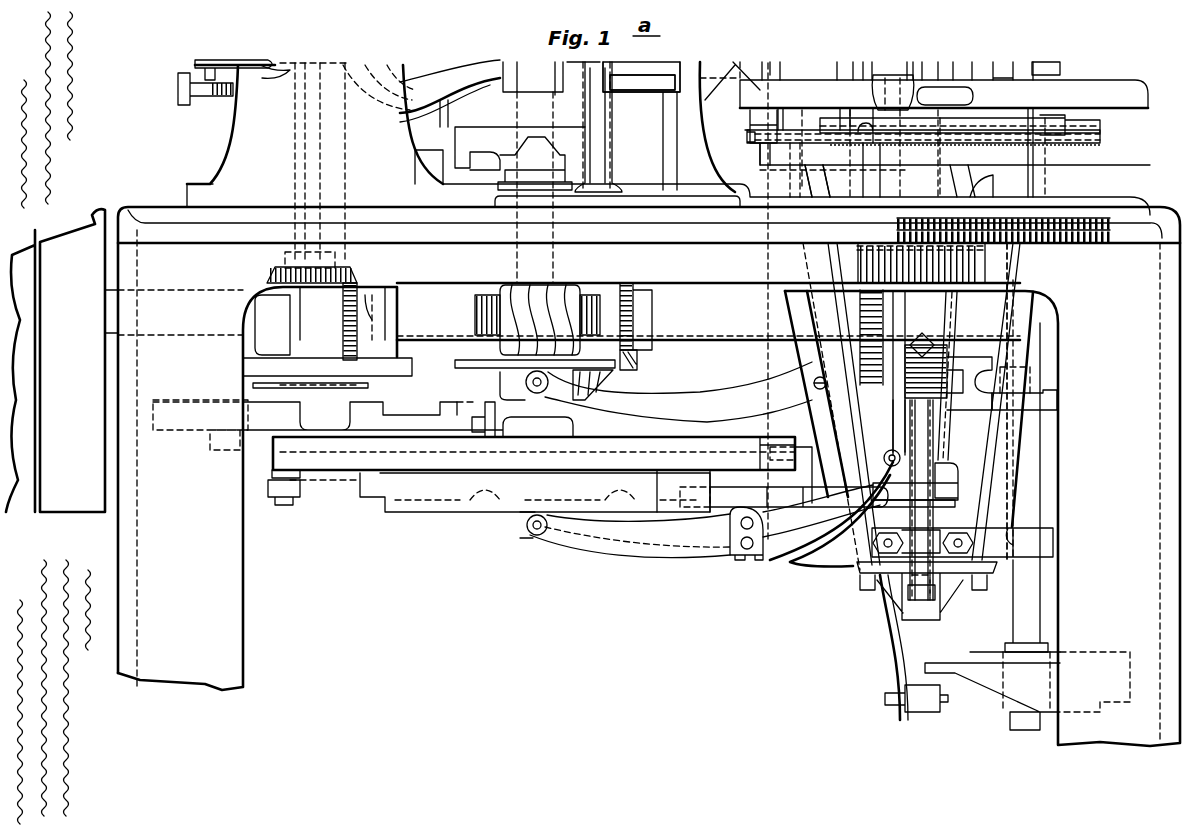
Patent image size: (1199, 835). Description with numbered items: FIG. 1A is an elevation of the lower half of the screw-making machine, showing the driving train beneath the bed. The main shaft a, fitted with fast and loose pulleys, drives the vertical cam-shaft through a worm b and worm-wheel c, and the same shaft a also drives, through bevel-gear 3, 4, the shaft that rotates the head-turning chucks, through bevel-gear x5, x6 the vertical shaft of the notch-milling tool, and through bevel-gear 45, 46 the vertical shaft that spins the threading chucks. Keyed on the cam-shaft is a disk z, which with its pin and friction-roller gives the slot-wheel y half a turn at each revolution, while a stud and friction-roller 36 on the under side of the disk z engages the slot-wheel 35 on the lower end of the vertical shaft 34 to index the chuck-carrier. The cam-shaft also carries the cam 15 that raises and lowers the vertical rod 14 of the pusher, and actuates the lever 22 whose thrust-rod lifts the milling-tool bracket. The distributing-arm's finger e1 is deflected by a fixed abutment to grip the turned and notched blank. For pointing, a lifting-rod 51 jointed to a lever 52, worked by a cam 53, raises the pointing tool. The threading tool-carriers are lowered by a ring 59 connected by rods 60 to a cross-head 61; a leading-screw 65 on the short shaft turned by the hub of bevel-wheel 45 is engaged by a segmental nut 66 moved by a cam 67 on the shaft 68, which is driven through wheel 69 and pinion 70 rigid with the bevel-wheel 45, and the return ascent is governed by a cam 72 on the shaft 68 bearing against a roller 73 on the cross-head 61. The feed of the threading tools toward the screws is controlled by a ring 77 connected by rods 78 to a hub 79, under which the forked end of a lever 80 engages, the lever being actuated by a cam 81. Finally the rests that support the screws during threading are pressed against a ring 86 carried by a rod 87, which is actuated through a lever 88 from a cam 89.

The lever 22 is at (205, 62).
The vertical rod 14 is at (425, 133).
The cam 15 is at (578, 152).
The finger e1 is at (615, 80).
The ring 59 is at (760, 158).
The ring 77 is at (790, 152).
The ring 86 is at (1090, 132).
The pinion 70 is at (940, 225).
The wheel 69 is at (1105, 222).
The bevel-wheel 45 is at (975, 268).
The rod 87 is at (920, 302).
The rods 78 is at (953, 318).
The leading-screw 65 is at (950, 355).
The segmental nut 66 is at (965, 368).
The cam 67 is at (1057, 393).
The lifting-rod 51 is at (905, 428).
The hub 79 is at (950, 472).
The shaft 68 is at (1035, 487).
The rods 60 is at (975, 560).
The cross-head 61 is at (885, 578).
The roller 73 is at (928, 710).
The cam 72 is at (992, 682).
The lever 52 is at (800, 548).
The slot-wheel 35 is at (733, 497).
The lever 80 is at (783, 525).
The cam 81 is at (508, 512).
The cam 53 is at (455, 512).
The disk z is at (455, 462).
The stud and friction-roller 36 is at (285, 508).
The slot-wheel y is at (410, 412).
The cam 89 is at (468, 365).
The vertical shaft 34 is at (538, 443).
The lever 88 is at (656, 392).
The bevel-gear 46 is at (832, 342).
The bevel-gear 4 is at (637, 364).
The worm-wheel c is at (595, 310).
The worm b is at (530, 310).
The bevel-gear 3 is at (560, 268).
The main shaft a is at (708, 311).
The bevel-gear x5 is at (347, 275).
The bevel-gear x6 is at (395, 285).